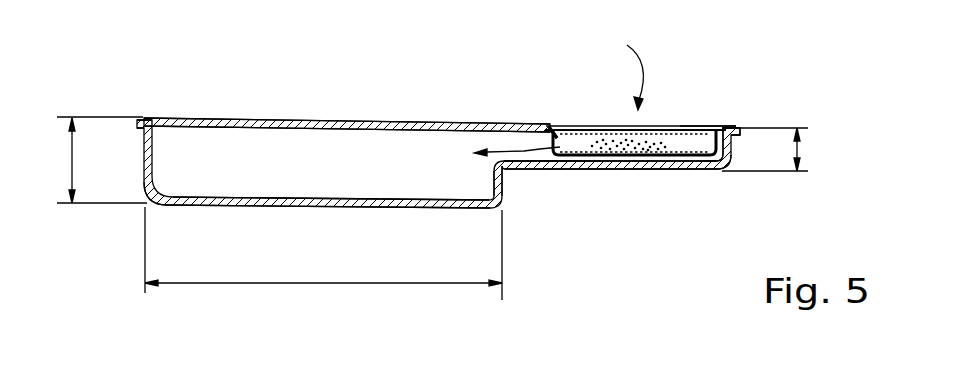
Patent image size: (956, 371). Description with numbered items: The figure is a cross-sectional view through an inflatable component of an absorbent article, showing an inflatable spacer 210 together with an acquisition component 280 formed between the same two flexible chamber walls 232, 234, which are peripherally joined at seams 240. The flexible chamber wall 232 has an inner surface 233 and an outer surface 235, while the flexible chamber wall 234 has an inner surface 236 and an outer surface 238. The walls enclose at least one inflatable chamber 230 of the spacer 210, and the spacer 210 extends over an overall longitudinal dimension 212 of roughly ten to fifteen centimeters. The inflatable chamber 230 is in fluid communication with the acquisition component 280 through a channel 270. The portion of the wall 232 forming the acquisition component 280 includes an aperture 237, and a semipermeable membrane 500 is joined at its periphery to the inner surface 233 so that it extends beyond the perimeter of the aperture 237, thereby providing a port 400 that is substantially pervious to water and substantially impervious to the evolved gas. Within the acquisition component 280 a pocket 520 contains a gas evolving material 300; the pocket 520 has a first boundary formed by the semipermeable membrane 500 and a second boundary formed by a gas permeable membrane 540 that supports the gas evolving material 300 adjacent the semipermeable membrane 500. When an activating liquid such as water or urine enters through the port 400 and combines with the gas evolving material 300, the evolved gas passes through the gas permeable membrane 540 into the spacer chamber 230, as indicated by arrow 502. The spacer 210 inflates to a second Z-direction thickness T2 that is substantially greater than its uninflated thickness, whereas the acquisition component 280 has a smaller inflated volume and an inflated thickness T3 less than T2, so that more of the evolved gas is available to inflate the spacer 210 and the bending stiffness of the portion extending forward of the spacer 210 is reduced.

The inflatable spacer 210 is at (287, 210).
The overall longitudinal dimension 212 is at (322, 285).
The inflatable chamber 230 is at (505, 185).
The flexible chamber wall 232 is at (188, 122).
The inner surface 233 is at (240, 130).
The flexible chamber wall 234 is at (178, 210).
The outer surface 235 is at (302, 122).
The inner surface 236 is at (353, 197).
The aperture 237 is at (575, 125).
The outer surface 238 is at (402, 210).
The seams 240 is at (137, 125).
The channel 270 is at (537, 140).
The acquisition component 280 is at (614, 170).
The gas evolving material 300 is at (693, 127).
The port 400 is at (621, 64).
The semipermeable membrane 500 is at (657, 127).
The arrow 502 is at (524, 150).
The pocket 520 is at (710, 172).
The gas permeable membrane 540 is at (571, 171).
The second Z-direction thickness T2 is at (72, 158).
The inflated thickness T3 is at (798, 151).